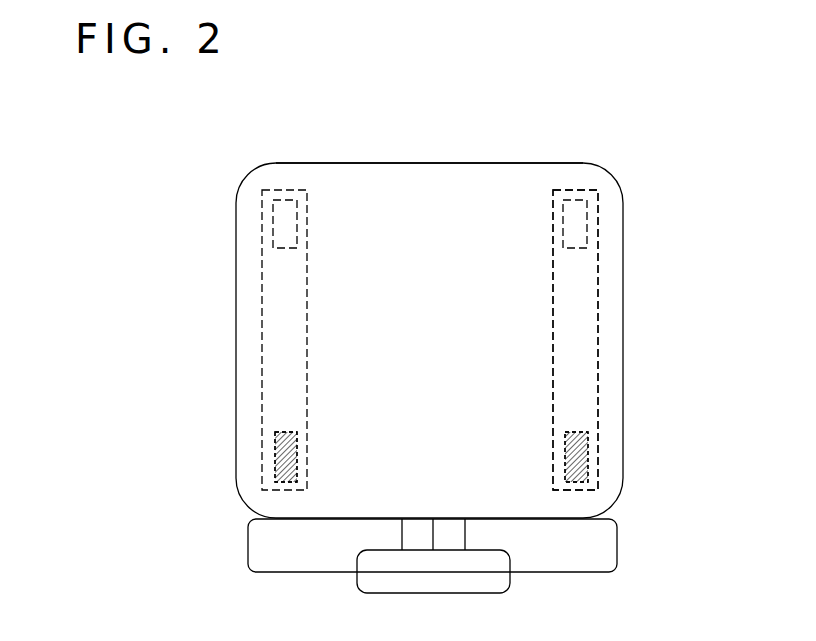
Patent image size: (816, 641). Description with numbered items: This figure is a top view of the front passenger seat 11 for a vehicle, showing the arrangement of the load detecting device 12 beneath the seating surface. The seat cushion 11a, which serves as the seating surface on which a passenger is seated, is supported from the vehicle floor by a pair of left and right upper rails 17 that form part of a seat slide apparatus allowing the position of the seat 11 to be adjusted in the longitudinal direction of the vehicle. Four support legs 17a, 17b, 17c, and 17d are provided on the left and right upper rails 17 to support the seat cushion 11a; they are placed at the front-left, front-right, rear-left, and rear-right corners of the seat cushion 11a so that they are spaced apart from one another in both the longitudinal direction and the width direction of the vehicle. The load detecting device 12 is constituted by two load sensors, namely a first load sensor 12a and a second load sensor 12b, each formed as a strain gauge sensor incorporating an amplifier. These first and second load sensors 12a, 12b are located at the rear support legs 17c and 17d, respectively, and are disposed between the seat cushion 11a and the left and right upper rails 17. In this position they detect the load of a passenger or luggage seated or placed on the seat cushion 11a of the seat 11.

The seat 11 is at (381, 146).
The seat cushion 11a is at (473, 168).
The load detecting device 12 is at (619, 418).
The first load sensor 12a is at (283, 452).
The second load sensor 12b is at (587, 448).
The upper rails 17 is at (275, 327).
The support leg 17a is at (262, 218).
The support leg 17b is at (603, 219).
The support leg 17c is at (261, 470).
The support leg 17d is at (602, 474).